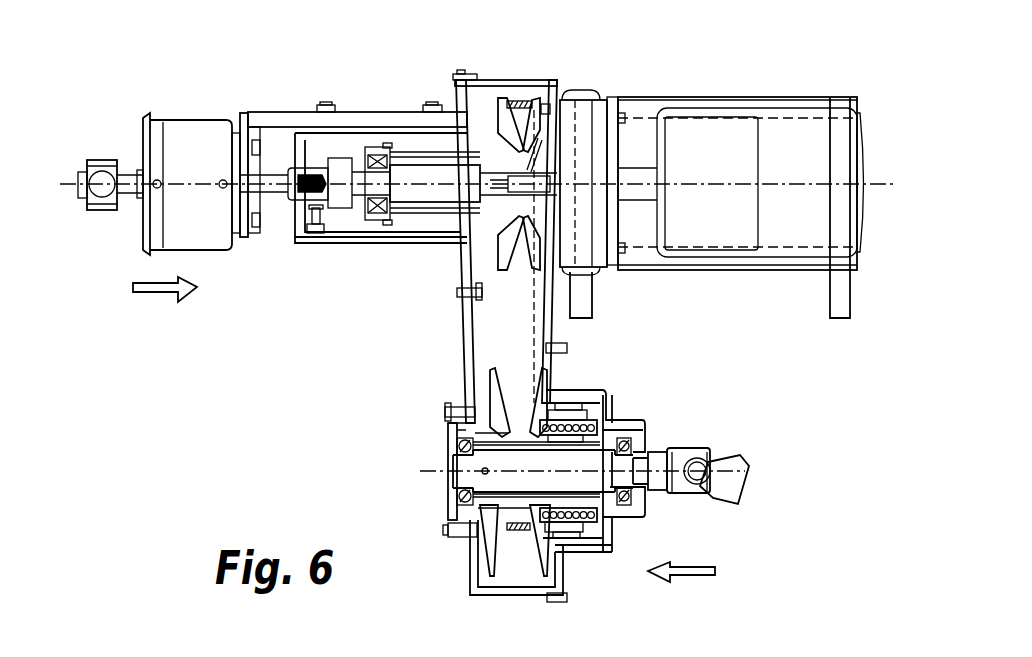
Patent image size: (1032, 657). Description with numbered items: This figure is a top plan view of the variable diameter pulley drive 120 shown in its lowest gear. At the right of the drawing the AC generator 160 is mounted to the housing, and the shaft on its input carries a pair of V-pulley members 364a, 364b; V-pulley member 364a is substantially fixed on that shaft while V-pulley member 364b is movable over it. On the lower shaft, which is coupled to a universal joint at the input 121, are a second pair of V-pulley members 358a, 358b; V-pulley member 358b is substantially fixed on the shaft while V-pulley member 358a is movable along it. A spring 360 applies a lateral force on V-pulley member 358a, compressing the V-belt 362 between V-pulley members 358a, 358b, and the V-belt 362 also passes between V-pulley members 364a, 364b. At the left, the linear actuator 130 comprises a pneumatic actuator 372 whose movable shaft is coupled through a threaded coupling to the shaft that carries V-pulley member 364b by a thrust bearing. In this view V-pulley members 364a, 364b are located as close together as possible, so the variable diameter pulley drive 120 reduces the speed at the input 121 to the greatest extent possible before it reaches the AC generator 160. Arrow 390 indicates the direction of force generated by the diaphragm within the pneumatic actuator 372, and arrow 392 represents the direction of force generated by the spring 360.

The linear actuator 130 is at (121, 99).
The pneumatic actuator 372 is at (188, 120).
The variable diameter pulley drive 120 is at (430, 336).
The V-pulley member 364b is at (487, 107).
The V-pulley member 364a is at (537, 107).
The V-belt 362 is at (517, 102).
The AC generator 160 is at (728, 162).
The spring 360 is at (573, 410).
The V-pulley member 358b is at (490, 567).
The V-pulley member 358a is at (550, 563).
The input 121 is at (725, 443).
The arrow 390 is at (150, 292).
The arrow 392 is at (690, 577).